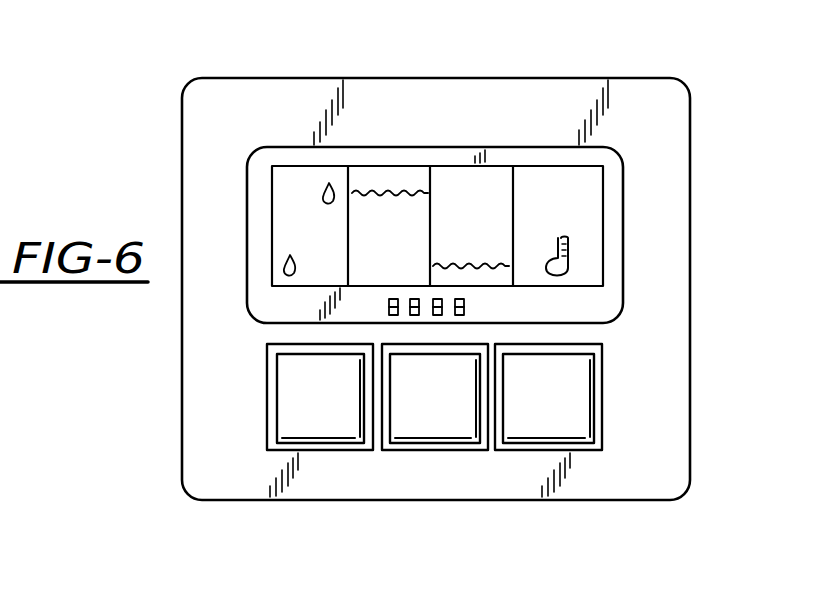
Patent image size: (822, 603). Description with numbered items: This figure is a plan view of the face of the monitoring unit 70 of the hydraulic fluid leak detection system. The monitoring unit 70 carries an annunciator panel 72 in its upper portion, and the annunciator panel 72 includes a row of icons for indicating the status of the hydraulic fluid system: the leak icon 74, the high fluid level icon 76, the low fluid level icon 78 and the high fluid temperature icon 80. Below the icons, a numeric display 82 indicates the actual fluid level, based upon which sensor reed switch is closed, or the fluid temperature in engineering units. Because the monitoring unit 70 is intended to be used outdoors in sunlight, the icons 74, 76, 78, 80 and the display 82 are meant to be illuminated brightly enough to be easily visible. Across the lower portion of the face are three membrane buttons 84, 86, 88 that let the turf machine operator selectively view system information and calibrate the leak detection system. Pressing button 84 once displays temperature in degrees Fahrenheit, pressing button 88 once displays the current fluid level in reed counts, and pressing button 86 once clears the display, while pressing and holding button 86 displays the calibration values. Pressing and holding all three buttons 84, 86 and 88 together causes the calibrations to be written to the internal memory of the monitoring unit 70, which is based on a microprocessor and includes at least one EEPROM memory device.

The monitoring unit 70 is at (697, 121).
The annunciator panel 72 is at (668, 218).
The leak icon 74 is at (308, 178).
The high fluid level icon 76 is at (405, 178).
The low fluid level icon 78 is at (495, 183).
The high fluid temperature icon 80 is at (558, 178).
The numeric display 82 is at (517, 302).
The membrane button 84 is at (302, 428).
The membrane button 86 is at (415, 425).
The membrane button 88 is at (558, 425).